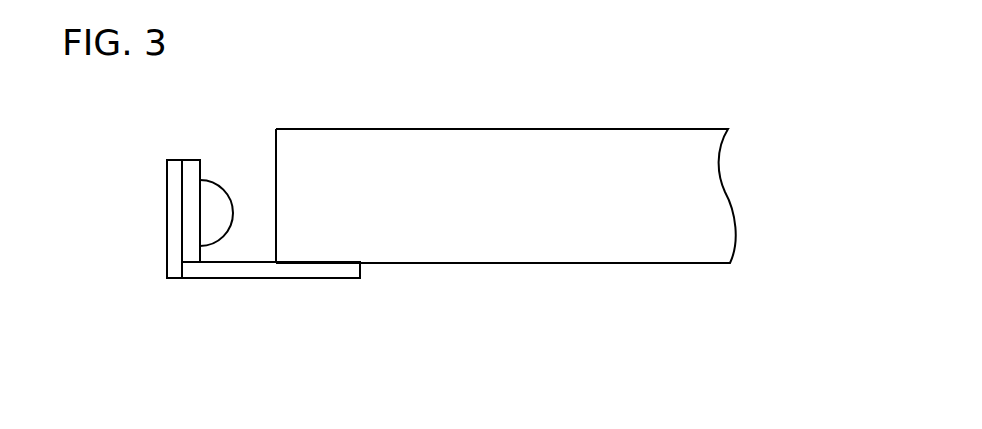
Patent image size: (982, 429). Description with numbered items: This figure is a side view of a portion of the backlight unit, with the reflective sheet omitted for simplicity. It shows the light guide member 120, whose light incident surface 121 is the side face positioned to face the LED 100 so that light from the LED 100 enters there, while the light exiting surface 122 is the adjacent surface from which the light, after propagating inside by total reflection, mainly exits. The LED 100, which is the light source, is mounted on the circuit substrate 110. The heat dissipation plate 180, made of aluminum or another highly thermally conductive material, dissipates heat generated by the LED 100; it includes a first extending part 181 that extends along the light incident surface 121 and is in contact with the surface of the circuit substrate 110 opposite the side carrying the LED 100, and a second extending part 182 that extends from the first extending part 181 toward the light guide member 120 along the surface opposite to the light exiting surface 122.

The LED 100 is at (212, 200).
The circuit substrate 110 is at (190, 170).
The light guide member 120 is at (595, 153).
The light incident surface 121 is at (276, 167).
The light exiting surface 122 is at (444, 129).
The heat dissipation plate 180 is at (215, 338).
The first extending part 181 is at (174, 279).
The second extending part 182 is at (217, 279).